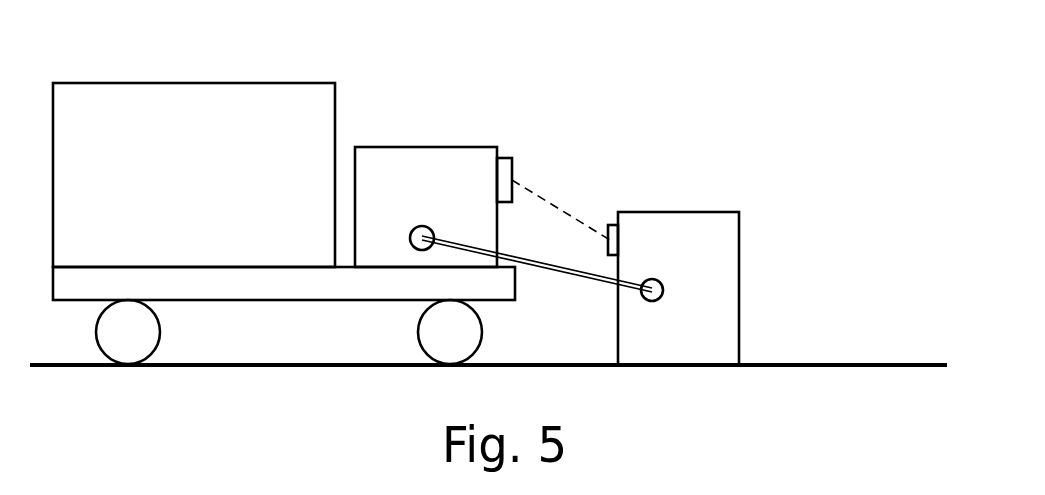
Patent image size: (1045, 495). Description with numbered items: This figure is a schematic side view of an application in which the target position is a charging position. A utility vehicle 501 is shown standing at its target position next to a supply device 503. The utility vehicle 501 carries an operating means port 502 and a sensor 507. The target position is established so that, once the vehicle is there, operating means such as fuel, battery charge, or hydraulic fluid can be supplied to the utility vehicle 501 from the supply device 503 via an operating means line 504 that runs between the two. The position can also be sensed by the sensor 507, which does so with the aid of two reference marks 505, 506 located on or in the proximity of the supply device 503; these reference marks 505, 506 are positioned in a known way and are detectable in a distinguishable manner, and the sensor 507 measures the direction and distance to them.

The utility vehicle 501 is at (273, 198).
The operating means port 502 is at (412, 250).
The supply device 503 is at (722, 263).
The operating means line 504 is at (568, 276).
The reference mark 505 is at (672, 180).
The reference mark 506 is at (608, 224).
The sensor 507 is at (512, 177).